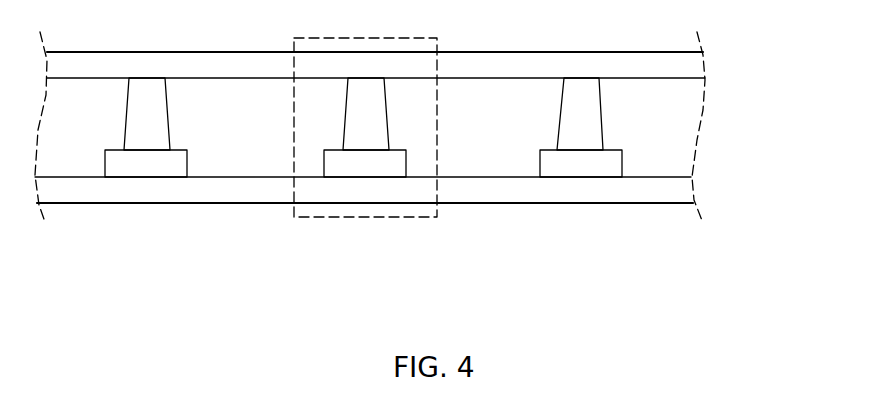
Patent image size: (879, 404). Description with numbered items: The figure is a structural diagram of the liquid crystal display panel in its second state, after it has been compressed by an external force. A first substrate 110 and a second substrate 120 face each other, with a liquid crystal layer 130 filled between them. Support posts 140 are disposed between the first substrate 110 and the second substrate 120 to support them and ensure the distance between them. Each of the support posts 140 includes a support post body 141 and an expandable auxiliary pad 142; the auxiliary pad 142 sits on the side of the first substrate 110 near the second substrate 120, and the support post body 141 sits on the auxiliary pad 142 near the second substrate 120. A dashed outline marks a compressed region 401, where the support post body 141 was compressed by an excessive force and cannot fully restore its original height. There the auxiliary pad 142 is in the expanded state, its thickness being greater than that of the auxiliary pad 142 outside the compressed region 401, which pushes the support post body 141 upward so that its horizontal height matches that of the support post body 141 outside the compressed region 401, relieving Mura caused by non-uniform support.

The first substrate 110 is at (670, 192).
The second substrate 120 is at (688, 67).
The liquid crystal layer 130 is at (670, 100).
The support posts 140 is at (447, 188).
The support post body 141 is at (587, 130).
The auxiliary pad 142 is at (603, 162).
The compressed region 401 is at (438, 215).